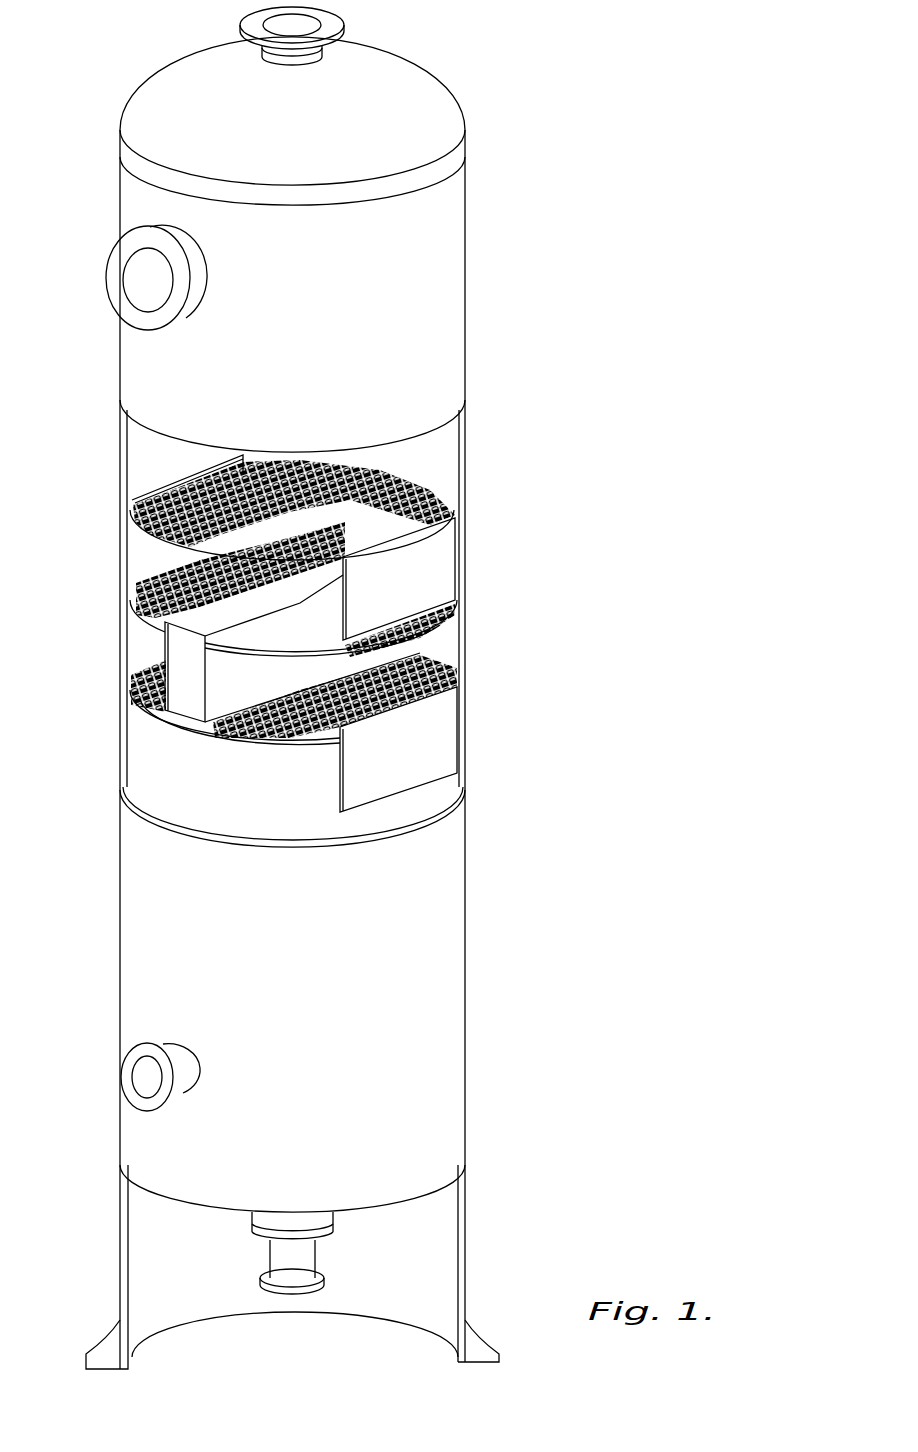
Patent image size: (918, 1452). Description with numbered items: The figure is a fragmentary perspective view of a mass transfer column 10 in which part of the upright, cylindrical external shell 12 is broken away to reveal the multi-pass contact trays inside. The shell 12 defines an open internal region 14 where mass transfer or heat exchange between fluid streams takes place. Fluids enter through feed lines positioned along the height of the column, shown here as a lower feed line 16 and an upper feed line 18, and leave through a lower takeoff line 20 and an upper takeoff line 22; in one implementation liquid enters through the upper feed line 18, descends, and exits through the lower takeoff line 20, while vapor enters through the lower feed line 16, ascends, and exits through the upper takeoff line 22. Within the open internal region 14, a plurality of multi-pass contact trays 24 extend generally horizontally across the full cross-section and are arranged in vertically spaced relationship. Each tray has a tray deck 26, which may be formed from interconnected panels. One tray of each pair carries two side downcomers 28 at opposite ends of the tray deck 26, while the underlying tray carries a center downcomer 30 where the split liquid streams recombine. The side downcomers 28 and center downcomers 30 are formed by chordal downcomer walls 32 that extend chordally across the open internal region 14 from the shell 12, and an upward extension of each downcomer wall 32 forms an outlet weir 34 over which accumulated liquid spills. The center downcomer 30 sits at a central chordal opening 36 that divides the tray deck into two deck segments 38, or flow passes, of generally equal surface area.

The mass transfer column 10 is at (474, 230).
The external shell 12 is at (462, 424).
The open internal region 14 is at (446, 453).
The lower feed line 16 is at (143, 1078).
The upper feed line 18 is at (140, 275).
The lower takeoff line 20 is at (305, 1262).
The upper takeoff line 22 is at (313, 25).
The multi-pass contact tray 24 is at (146, 557).
The tray deck 26 is at (378, 488).
The side downcomer 28 is at (124, 533).
The center downcomer 30 is at (166, 650).
The chordal downcomer wall 32 is at (138, 551).
The outlet weir 34 is at (142, 497).
The chordal opening 36 is at (320, 586).
The deck segment 38 is at (160, 623).